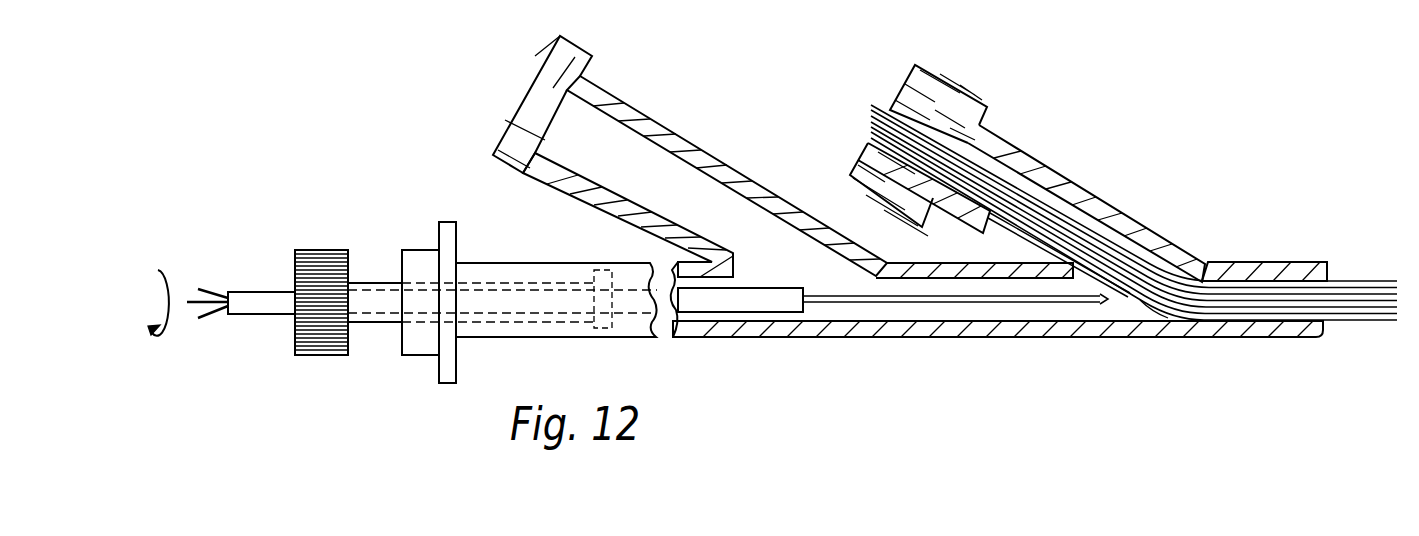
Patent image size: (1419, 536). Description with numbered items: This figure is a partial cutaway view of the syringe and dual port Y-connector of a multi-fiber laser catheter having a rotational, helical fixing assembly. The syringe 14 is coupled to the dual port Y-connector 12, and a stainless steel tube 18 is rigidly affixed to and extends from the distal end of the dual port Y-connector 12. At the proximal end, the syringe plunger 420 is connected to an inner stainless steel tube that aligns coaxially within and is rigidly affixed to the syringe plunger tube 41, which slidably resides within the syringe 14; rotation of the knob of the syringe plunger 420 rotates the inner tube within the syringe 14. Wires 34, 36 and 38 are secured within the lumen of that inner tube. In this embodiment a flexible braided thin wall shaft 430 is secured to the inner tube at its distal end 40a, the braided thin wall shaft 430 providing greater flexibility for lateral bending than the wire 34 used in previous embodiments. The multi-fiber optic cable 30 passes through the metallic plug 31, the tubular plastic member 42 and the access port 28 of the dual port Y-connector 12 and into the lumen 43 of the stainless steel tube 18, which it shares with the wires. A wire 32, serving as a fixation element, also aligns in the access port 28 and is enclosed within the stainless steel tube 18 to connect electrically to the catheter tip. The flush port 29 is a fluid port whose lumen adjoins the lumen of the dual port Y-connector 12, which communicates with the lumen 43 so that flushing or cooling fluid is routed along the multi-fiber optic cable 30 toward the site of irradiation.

The dual port Y-connector 12 is at (1038, 131).
The syringe 14 is at (508, 250).
The stainless steel tube 18 is at (1340, 275).
The access port 28 is at (1100, 204).
The flush port 29 is at (684, 140).
The multi-fiber optic cable 30 is at (869, 128).
The metallic plug 31 is at (936, 83).
The wire 32 is at (1130, 295).
The wire 34 is at (190, 300).
The wire 36 is at (217, 296).
The wire 38 is at (210, 313).
The distal end of stainless steel tube 40a is at (748, 298).
The syringe plunger tube 41 is at (377, 283).
The tubular plastic member 42 is at (876, 105).
The lumen 43 is at (1147, 305).
The syringe plunger 420 is at (328, 250).
The flexible braided thin wall shaft 430 is at (883, 302).